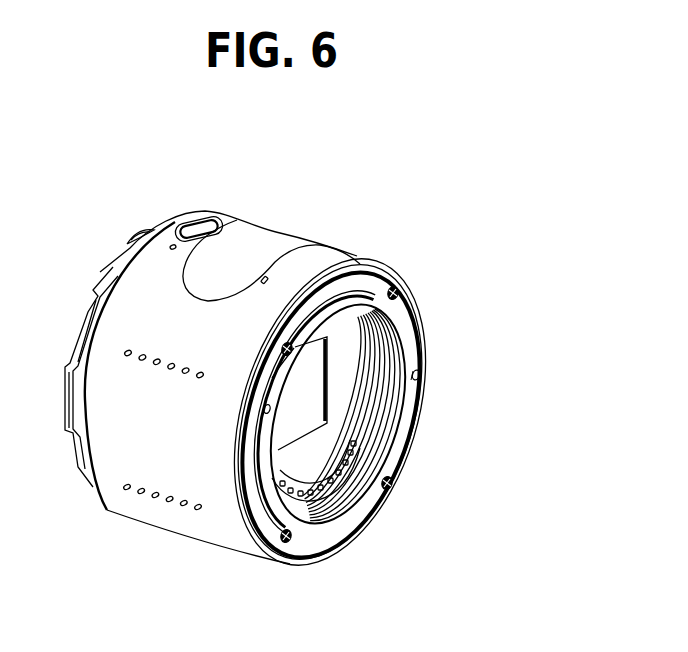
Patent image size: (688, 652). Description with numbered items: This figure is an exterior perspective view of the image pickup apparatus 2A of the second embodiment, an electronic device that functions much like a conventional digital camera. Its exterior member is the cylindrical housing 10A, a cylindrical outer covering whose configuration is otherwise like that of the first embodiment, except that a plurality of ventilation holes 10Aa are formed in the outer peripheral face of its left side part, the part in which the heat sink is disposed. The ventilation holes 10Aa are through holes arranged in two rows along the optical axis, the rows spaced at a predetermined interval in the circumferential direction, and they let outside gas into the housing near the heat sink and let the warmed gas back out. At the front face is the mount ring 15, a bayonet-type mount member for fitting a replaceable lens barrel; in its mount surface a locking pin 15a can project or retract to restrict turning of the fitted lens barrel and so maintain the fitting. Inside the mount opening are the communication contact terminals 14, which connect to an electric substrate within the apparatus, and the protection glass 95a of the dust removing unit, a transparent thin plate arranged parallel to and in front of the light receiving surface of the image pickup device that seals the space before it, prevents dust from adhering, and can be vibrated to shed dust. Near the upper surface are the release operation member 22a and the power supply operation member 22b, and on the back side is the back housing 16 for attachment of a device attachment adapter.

The image pickup apparatus 2A is at (431, 208).
The cylindrical housing 10A is at (315, 254).
The ventilation holes 10Aa is at (157, 363).
The back housing 16 is at (118, 272).
The release operation member 22a is at (247, 252).
The power supply operation member 22b is at (198, 230).
The mount ring 15 is at (400, 315).
The locking pin 15a is at (420, 378).
The protection glass 95a is at (308, 377).
The communication contact terminals 14 is at (352, 444).